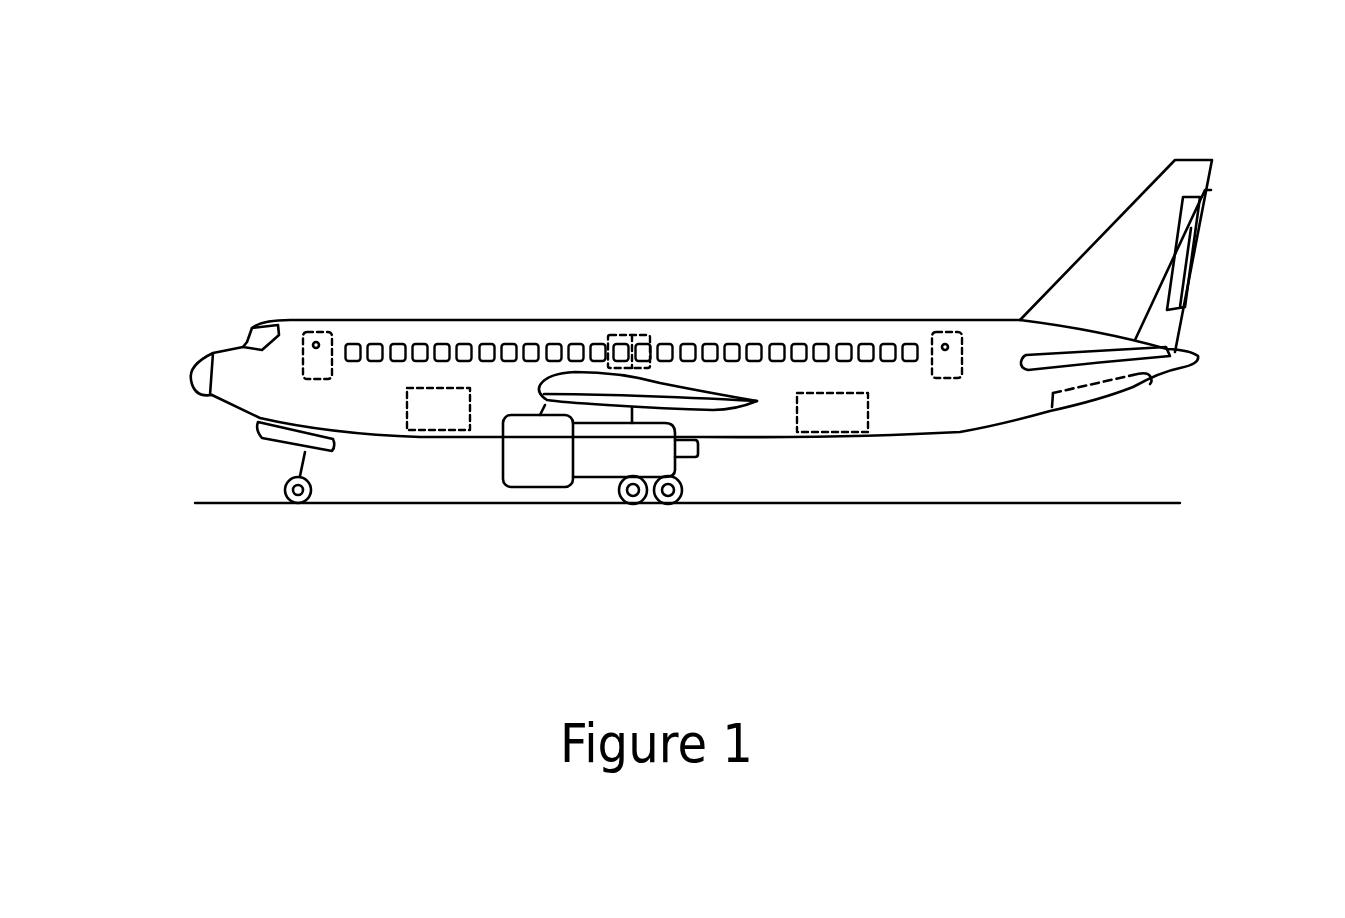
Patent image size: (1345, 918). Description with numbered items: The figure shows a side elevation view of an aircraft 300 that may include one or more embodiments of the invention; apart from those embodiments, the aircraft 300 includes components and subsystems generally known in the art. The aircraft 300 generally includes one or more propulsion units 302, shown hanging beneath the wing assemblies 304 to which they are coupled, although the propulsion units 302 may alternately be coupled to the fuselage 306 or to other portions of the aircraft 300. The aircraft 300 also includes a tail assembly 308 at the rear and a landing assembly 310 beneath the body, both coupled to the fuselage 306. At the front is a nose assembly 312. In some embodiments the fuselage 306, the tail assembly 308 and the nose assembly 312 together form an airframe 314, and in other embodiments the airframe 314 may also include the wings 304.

The aircraft 300 is at (730, 309).
The propulsion unit 302 is at (598, 478).
The wing assembly 304 is at (727, 412).
The fuselage 306 is at (675, 321).
The tail assembly 308 is at (1217, 320).
The landing assembly 310 is at (293, 505).
The nose assembly 312 is at (226, 348).
The airframe 314 is at (970, 433).